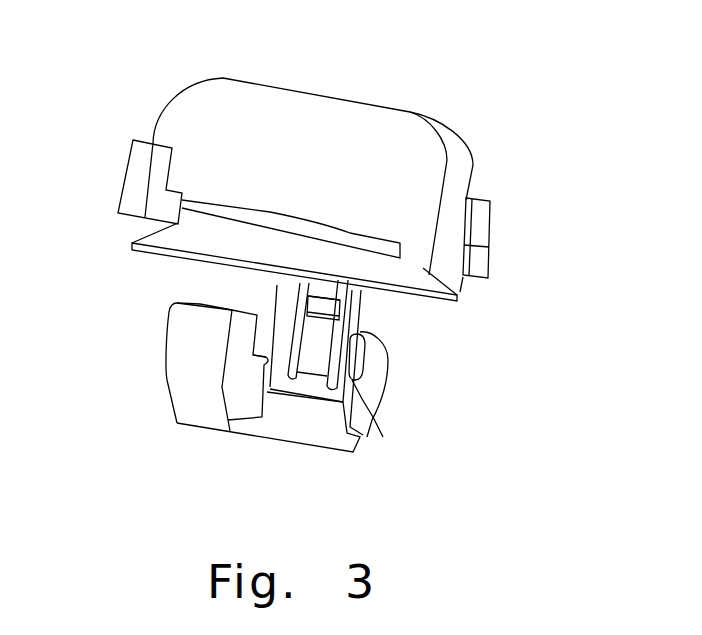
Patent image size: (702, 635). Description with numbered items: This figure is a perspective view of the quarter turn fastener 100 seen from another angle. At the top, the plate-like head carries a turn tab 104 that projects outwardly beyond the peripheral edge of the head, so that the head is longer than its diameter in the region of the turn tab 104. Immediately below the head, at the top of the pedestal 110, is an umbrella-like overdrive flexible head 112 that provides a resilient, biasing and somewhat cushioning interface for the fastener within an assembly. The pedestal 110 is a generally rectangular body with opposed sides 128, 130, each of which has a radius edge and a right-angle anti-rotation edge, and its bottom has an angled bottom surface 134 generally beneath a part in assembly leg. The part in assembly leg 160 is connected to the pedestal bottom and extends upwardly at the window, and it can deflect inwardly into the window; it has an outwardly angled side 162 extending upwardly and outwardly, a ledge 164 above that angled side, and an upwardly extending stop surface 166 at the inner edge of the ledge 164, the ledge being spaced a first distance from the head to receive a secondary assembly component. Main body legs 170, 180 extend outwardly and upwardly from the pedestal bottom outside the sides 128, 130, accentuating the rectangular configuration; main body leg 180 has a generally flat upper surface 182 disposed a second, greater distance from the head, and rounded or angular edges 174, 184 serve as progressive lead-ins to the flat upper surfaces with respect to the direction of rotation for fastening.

The quarter turn fastener 100 is at (147, 97).
The turn tab 104 is at (297, 107).
The pedestal 110 is at (245, 447).
The overdrive flexible head 112 is at (440, 290).
The side 128 is at (385, 405).
The side 130 is at (237, 281).
The angled bottom surface 134 is at (295, 427).
The part in assembly leg 160 is at (305, 333).
The outwardly angled side 162 is at (350, 350).
The ledge 164 is at (333, 298).
The stop surface 166 is at (320, 307).
The main body leg 170 is at (360, 407).
The rounded or angular edge 174 is at (380, 353).
The main body leg 180 is at (192, 352).
The flat upper surface 182 is at (226, 308).
The rounded or angular edge 184 is at (185, 306).